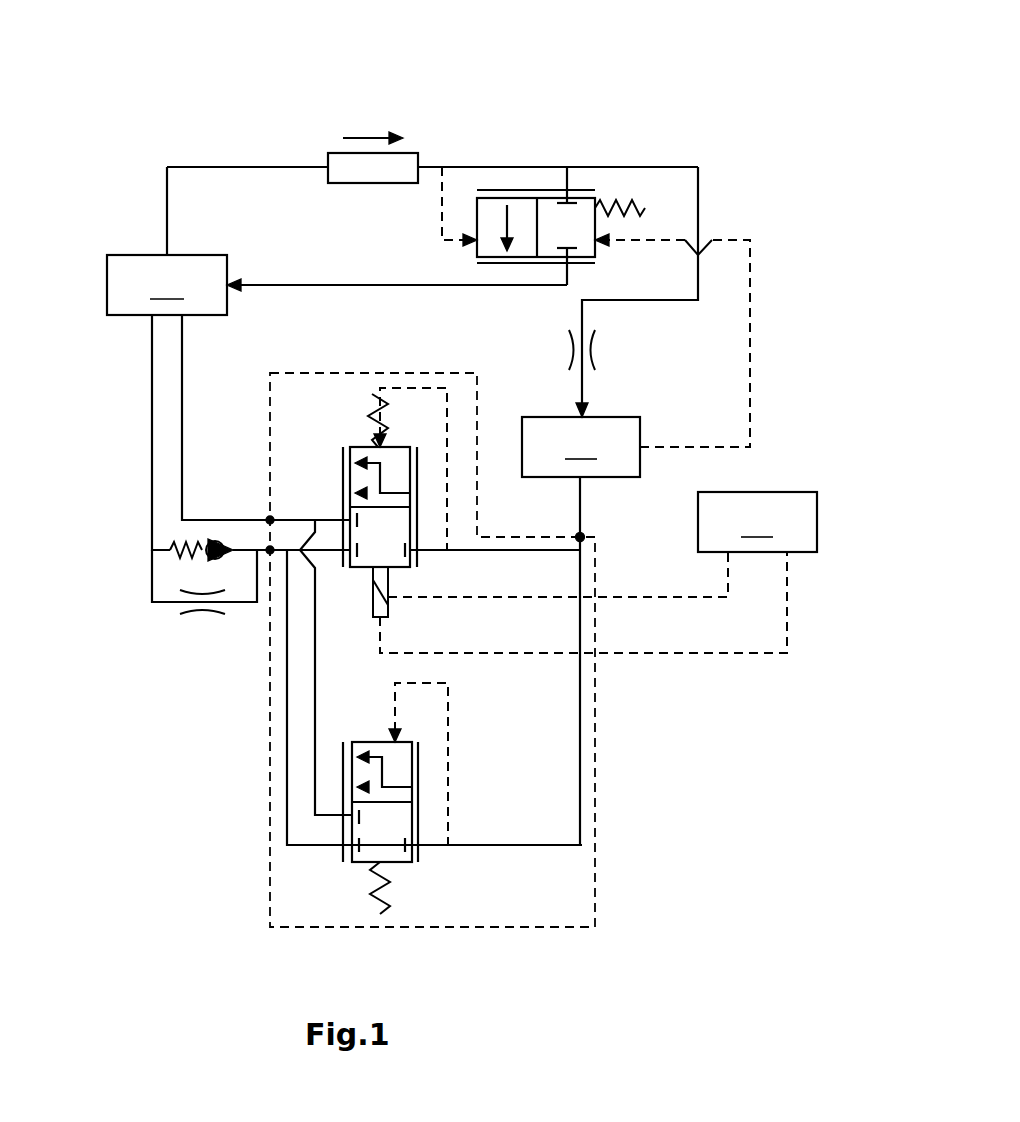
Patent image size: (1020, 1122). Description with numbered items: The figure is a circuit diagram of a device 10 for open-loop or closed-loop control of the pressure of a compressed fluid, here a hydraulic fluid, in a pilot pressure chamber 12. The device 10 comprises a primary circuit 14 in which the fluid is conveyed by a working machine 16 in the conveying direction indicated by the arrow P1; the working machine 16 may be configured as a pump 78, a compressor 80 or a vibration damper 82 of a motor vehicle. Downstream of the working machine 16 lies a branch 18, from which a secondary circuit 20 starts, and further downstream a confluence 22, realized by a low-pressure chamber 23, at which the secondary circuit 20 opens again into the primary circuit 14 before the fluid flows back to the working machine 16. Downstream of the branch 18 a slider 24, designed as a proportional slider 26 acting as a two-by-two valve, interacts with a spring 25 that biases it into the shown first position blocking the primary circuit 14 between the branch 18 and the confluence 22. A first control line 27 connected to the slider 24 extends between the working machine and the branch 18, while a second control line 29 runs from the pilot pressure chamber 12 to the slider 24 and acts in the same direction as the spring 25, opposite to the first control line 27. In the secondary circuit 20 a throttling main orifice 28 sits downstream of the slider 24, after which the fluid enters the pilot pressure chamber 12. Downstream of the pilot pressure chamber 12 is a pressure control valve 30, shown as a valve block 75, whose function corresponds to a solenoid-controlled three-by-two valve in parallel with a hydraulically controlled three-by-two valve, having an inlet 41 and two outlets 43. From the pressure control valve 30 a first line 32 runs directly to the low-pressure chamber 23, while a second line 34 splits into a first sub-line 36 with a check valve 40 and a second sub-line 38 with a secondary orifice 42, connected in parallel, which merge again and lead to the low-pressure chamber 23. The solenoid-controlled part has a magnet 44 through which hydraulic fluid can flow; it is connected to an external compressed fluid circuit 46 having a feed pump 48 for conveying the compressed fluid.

The device 10 is at (92, 74).
The pilot pressure chamber 12 is at (581, 447).
The primary circuit 14 is at (273, 285).
The working machine 16 is at (495, 213).
The pump 78 is at (495, 213).
The compressor 80 is at (495, 213).
The vibration damper 82 is at (367, 185).
The branch 18 is at (552, 177).
The secondary circuit 20 is at (580, 312).
The confluence 22 is at (156, 233).
The low-pressure chamber 23 is at (138, 221).
The slider 24 is at (552, 177).
The proportional slider 26 is at (578, 135).
The spring 25 is at (630, 205).
The first control line 27 is at (442, 190).
The main orifice 28 is at (590, 352).
The second control line 29 is at (752, 300).
The pressure control valve 30 is at (506, 650).
The valve block 75 is at (596, 780).
The first line 32 is at (182, 365).
The second line 34 is at (152, 400).
The first sub-line 36 is at (151, 522).
The second sub-line 38 is at (173, 605).
The check valve 40 is at (192, 545).
The inlet 41 is at (582, 537).
The secondary orifice 42 is at (203, 612).
The outlets 43 is at (270, 550).
The magnet 44 is at (388, 600).
The external compressed fluid circuit 46 is at (748, 655).
The feed pump 48 is at (757, 522).
The arrow P1 is at (372, 137).